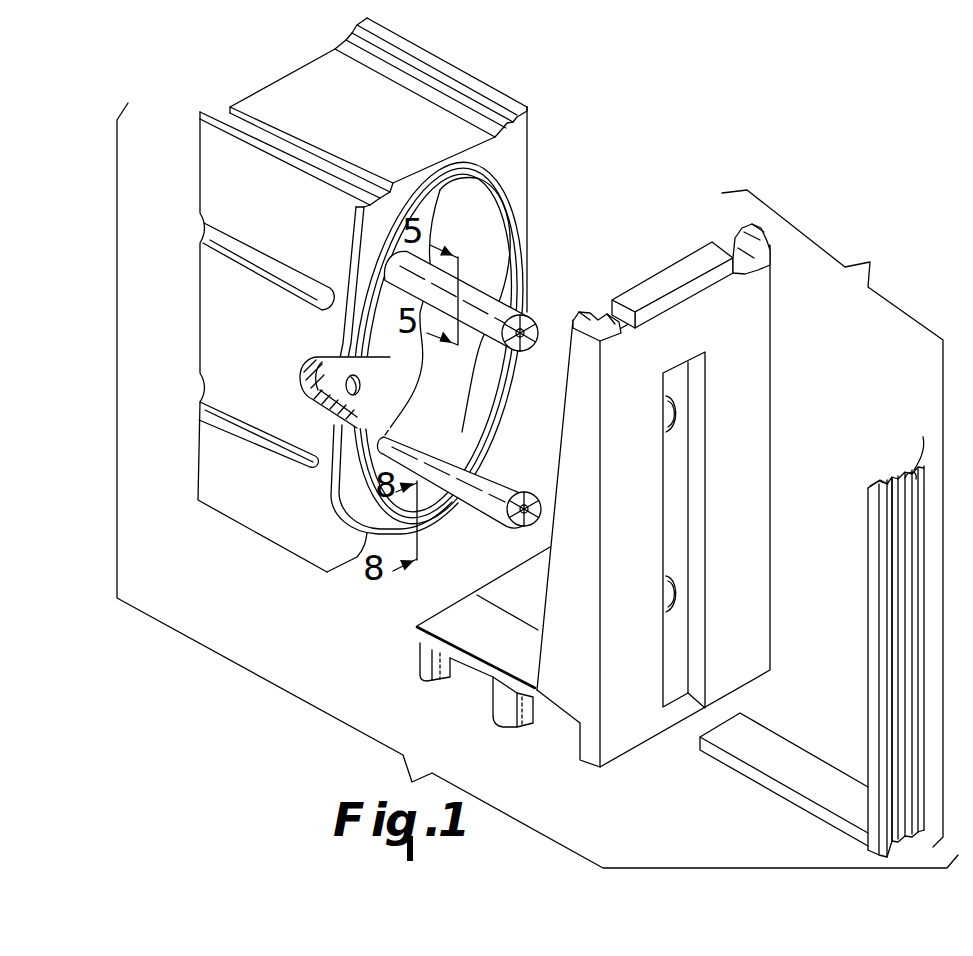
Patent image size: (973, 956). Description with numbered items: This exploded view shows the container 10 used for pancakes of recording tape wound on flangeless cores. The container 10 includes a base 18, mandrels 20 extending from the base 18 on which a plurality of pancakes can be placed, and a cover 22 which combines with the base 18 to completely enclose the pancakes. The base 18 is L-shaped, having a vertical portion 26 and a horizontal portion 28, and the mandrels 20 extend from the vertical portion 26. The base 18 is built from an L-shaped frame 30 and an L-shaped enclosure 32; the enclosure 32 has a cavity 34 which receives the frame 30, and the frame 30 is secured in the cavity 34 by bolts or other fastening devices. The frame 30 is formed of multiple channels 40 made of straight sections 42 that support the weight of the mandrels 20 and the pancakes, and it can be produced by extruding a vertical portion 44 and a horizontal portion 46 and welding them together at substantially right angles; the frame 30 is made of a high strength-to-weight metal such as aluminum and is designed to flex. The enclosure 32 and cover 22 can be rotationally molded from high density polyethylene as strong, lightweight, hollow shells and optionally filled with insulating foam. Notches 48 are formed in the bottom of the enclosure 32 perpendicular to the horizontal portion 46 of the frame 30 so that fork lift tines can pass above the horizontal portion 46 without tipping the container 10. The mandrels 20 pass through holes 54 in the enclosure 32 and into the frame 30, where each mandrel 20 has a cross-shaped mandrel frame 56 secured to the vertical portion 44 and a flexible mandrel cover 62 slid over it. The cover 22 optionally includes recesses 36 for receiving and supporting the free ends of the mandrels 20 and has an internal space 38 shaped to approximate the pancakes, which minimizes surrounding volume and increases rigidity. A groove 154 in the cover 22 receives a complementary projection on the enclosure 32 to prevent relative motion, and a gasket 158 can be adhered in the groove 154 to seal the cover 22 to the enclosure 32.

The container 10 is at (682, 128).
The base 18 is at (380, 648).
The mandrel 20 is at (476, 350).
The cover 22 is at (524, 88).
The vertical portion 26 is at (563, 520).
The horizontal portion 28 is at (507, 712).
The L-shaped frame 30 is at (860, 578).
The L-shaped enclosure 32 is at (778, 330).
The cavity 34 is at (693, 693).
The recesses 36 is at (300, 388).
The internal space 38 is at (470, 197).
The channels 40 is at (870, 484).
The straight sections 42 is at (924, 441).
The vertical portion 44 is at (873, 677).
The horizontal portion 46 is at (770, 780).
The notches 48 is at (557, 723).
The holes 54 is at (665, 600).
The mandrel frame 56 is at (536, 349).
The mandrel cover 62 is at (418, 415).
The groove 154 is at (515, 222).
The gasket 158 is at (513, 250).